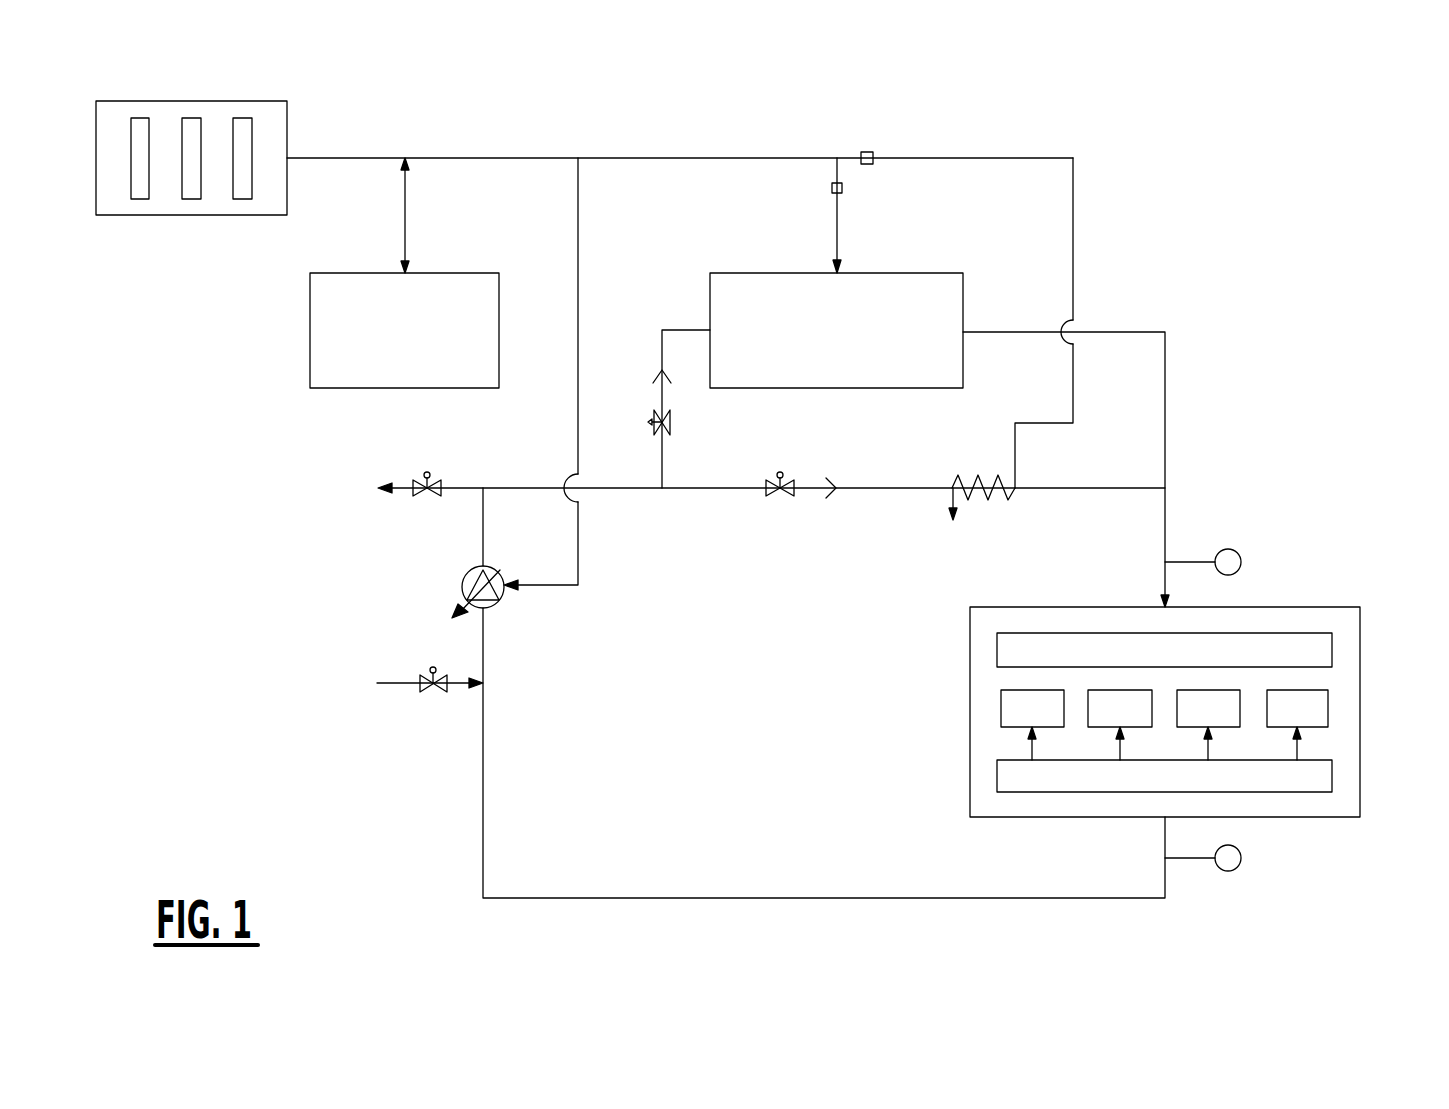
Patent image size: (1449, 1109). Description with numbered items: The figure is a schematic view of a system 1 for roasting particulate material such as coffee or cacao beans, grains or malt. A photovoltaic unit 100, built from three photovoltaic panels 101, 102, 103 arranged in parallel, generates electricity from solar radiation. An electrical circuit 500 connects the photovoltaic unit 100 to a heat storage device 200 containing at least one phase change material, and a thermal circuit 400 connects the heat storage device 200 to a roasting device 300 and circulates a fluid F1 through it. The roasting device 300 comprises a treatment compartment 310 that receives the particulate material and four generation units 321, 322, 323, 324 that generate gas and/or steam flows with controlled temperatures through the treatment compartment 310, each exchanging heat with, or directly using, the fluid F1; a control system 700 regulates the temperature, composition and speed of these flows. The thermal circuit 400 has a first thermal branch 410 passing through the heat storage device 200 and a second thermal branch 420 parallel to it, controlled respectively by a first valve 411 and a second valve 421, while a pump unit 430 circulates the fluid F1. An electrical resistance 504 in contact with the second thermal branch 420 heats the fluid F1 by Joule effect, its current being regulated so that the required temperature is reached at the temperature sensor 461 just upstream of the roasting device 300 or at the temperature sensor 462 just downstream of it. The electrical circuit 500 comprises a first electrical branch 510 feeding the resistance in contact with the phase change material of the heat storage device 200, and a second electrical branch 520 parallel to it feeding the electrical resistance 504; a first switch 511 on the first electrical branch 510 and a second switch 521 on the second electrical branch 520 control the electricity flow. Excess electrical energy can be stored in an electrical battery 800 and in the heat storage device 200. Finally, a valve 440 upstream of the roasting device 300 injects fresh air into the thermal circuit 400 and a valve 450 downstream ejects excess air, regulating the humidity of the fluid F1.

The system for roasting particulate material 1 is at (1160, 110).
The photovoltaic unit 100 is at (160, 101).
The photovoltaic panel 101 is at (132, 182).
The photovoltaic panel 102 is at (187, 173).
The photovoltaic panel 103 is at (242, 182).
The heat storage device 200 is at (733, 277).
The roasting device 300 is at (1360, 647).
The treatment compartment 310 is at (1003, 648).
The generation unit 321 is at (1003, 714).
The generation unit 322 is at (1100, 722).
The generation unit 323 is at (1230, 727).
The generation unit 324 is at (1328, 708).
The thermal circuit 400 is at (482, 643).
The first thermal branch 410 is at (657, 388).
The first valve 411 is at (667, 425).
The second thermal branch 420 is at (812, 488).
The second valve 421 is at (775, 496).
The pump unit 430 is at (463, 576).
The valve 440 is at (425, 692).
The valve 450 is at (415, 496).
The temperature sensor 461 is at (1240, 553).
The temperature sensor 462 is at (1228, 871).
The electrical circuit 500 is at (675, 158).
The electrical resistance 504 is at (990, 500).
The first electrical branch 510 is at (838, 225).
The first switch 511 is at (830, 187).
The second electrical branch 520 is at (947, 158).
The second switch 521 is at (867, 152).
The control system 700 is at (1003, 777).
The electrical battery 800 is at (310, 353).